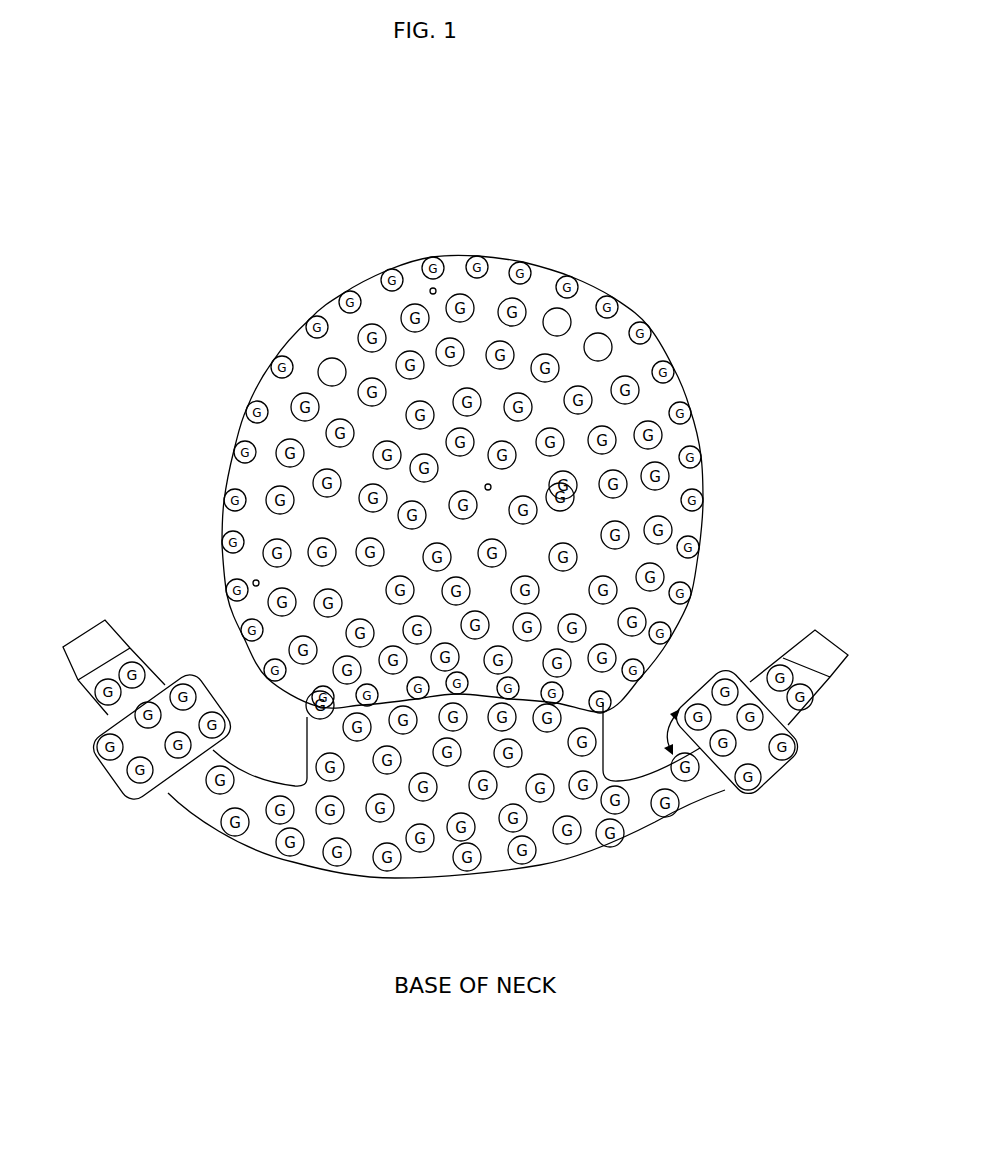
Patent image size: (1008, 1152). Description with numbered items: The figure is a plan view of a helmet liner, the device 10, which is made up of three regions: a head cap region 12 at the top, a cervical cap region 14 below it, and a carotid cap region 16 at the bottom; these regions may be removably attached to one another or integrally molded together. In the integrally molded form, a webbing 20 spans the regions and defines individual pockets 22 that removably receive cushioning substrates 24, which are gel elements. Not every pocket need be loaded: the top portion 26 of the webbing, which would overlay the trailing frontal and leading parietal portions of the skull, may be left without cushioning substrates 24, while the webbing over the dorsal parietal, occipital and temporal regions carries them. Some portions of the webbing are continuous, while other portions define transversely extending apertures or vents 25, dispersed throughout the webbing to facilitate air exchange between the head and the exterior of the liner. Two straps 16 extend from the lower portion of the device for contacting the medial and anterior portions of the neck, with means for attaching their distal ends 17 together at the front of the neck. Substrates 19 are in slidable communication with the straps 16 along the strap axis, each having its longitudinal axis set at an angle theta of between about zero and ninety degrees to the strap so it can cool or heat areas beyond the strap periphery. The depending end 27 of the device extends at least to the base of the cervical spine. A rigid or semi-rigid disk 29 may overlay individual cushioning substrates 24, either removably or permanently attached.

The device 10 is at (778, 192).
The head cap region 12 is at (335, 323).
The cervical cap region 14 is at (583, 760).
The carotid cap region 16 is at (252, 838).
The distal ends 17 is at (80, 655).
The substrates 19 is at (133, 788).
The webbing 20 is at (633, 415).
The pockets 22 is at (595, 340).
The cushioning substrates 24 is at (550, 312).
The vents 25 is at (432, 288).
The top portion 26 is at (490, 488).
The depending end 27 is at (408, 872).
The disk 29 is at (417, 630).